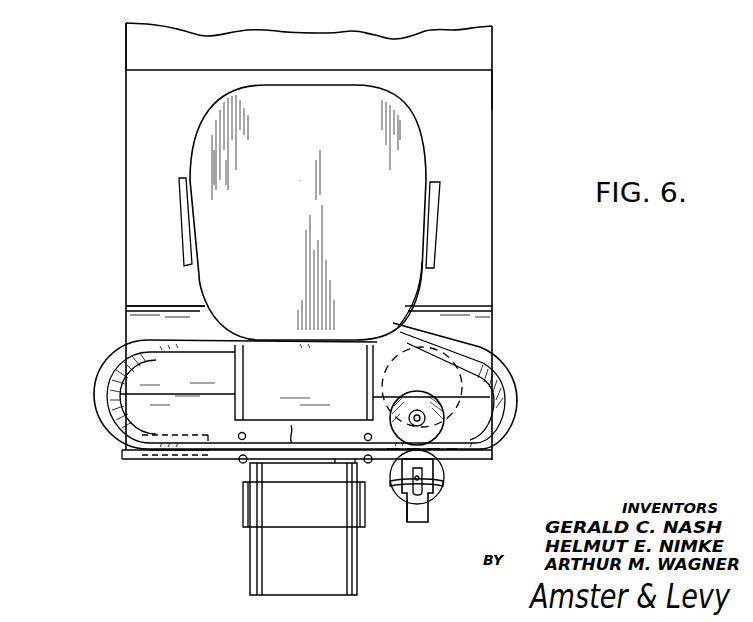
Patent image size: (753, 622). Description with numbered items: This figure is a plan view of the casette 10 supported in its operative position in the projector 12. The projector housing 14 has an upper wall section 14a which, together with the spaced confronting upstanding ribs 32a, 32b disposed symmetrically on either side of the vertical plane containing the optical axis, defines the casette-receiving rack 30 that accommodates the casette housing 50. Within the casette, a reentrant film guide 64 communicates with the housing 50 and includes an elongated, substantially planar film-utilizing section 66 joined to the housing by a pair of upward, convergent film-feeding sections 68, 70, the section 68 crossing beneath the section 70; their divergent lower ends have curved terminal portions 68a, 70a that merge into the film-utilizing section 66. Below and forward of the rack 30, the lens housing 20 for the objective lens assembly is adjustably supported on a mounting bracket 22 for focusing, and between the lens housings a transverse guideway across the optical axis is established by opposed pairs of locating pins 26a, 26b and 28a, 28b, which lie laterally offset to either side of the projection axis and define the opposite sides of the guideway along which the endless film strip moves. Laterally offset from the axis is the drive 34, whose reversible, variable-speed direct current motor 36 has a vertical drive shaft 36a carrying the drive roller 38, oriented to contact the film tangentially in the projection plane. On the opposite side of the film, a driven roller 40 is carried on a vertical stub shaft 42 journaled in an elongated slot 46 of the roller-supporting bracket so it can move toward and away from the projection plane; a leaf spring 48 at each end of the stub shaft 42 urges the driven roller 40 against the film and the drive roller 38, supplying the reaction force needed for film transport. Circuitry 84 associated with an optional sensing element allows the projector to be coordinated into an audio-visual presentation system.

The casette 10 is at (401, 151).
The projector 12 is at (494, 137).
The projector housing 14 is at (134, 112).
The upper wall section 14a is at (486, 94).
The lens housing 20 is at (246, 355).
The mounting bracket 22 is at (252, 512).
The locating pin 26a is at (239, 433).
The locating pin 26b is at (240, 461).
The locating pin 28a is at (364, 434).
The locating pin 28b is at (362, 468).
The casette-receiving rack 30 is at (425, 277).
The upstanding rib 32a is at (183, 198).
The upstanding rib 32b is at (433, 228).
The drive 34 is at (436, 516).
The motor 36 is at (412, 357).
The drive shaft 36a is at (417, 414).
The drive roller 38 is at (441, 418).
The driven roller 40 is at (396, 465).
The stub shaft 42 is at (421, 476).
The slot 46 is at (418, 500).
The leaf spring 48 is at (438, 488).
The housing 50 is at (212, 132).
The reentrant film guide 64 is at (196, 454).
The film-utilizing section 66 is at (298, 413).
The film-feeding section 68 is at (440, 332).
The curved terminal portion 68a is at (515, 403).
The film-feeding section 70 is at (160, 340).
The curved terminal portion 70a is at (100, 398).
The circuitry 84 is at (165, 456).